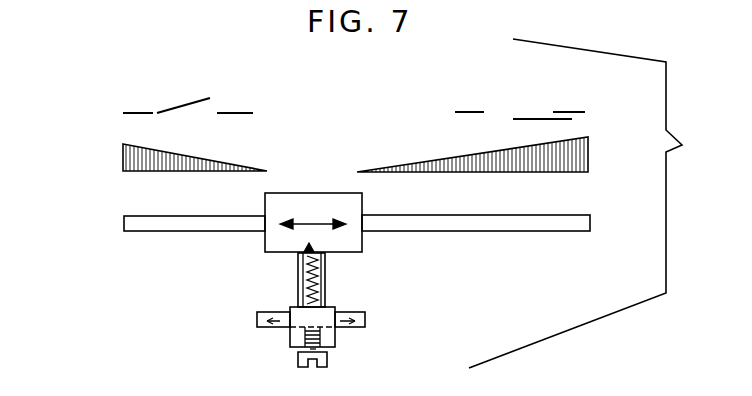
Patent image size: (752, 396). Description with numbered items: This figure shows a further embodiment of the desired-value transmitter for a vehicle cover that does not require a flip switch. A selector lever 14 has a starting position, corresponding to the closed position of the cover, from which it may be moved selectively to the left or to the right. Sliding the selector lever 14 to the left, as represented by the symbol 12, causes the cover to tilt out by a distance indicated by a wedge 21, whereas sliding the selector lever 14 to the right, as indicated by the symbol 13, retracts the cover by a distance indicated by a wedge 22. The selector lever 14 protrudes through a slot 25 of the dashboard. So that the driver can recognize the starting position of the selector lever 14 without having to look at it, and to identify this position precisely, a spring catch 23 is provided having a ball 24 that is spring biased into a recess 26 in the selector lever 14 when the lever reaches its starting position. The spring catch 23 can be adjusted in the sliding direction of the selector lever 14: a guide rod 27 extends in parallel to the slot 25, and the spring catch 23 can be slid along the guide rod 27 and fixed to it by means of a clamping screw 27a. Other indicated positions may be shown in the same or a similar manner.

The symbol 12 is at (188, 86).
The symbol 13 is at (502, 109).
The selector lever 14 is at (343, 243).
The wedge 21 is at (133, 152).
The wedge 22 is at (578, 153).
The spring catch 23 is at (332, 285).
The ball 24 is at (300, 266).
The slot 25 is at (220, 222).
The recess 26 is at (308, 246).
The guide rod 27 is at (268, 327).
The clamping screw 27a is at (330, 362).